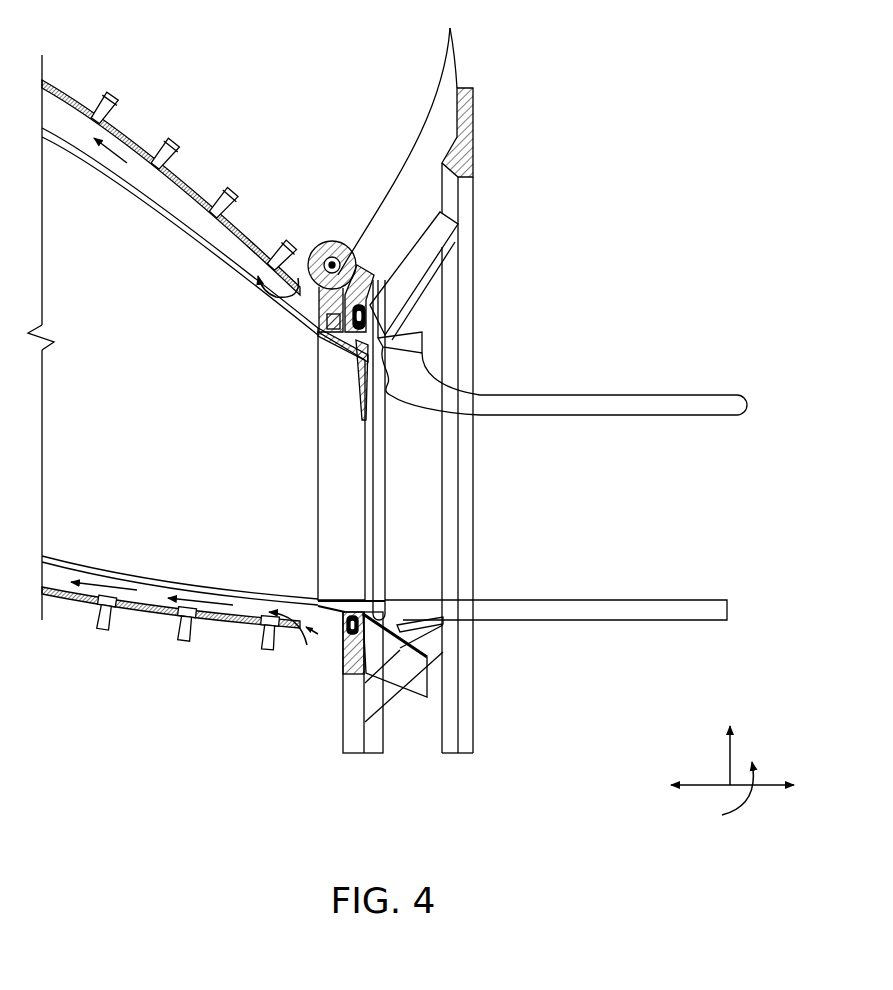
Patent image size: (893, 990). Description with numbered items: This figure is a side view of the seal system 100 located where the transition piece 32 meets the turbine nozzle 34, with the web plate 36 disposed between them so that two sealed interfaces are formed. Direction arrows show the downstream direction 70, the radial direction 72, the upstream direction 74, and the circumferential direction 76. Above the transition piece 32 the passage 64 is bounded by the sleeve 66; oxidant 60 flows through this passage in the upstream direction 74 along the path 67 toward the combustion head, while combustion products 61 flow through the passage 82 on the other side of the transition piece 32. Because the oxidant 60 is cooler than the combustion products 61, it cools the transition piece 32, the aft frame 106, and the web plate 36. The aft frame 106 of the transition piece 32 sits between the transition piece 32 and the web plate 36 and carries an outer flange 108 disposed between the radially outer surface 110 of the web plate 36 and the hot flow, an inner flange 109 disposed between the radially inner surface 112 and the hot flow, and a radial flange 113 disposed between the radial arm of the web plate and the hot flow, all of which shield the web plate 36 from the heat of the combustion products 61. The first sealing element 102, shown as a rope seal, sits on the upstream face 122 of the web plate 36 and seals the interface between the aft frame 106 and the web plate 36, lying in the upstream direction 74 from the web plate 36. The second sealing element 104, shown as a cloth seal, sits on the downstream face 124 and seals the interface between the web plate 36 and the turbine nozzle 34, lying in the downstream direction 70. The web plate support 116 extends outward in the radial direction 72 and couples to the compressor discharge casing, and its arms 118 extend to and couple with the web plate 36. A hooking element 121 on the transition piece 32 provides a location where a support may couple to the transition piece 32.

The transition piece 32 is at (196, 248).
The turbine nozzle 34 is at (671, 519).
The web plate 36 is at (380, 277).
The oxidant 60 is at (235, 718).
The combustion products 61 is at (95, 319).
The passage 64 is at (178, 203).
The sleeve 66 is at (280, 232).
The path 67 is at (110, 157).
The downstream direction 70 is at (770, 790).
The radial direction 72 is at (727, 760).
The upstream direction 74 is at (703, 790).
The circumferential direction 76 is at (748, 822).
The passage 82 is at (141, 421).
The seal system 100 is at (346, 770).
The first sealing element 102 is at (323, 317).
The second sealing element 104 is at (420, 355).
The aft frame 106 is at (330, 590).
The outer flange 108 is at (345, 355).
The inner flange 109 is at (370, 620).
The radially outer surface 110 is at (392, 332).
The radially inner surface 112 is at (345, 635).
The radial flange 113 is at (345, 465).
The web plate support 116 is at (462, 153).
The arms 118 is at (415, 290).
The hooking element 121 is at (331, 247).
The upstream face 122 is at (352, 287).
The downstream face 124 is at (422, 348).